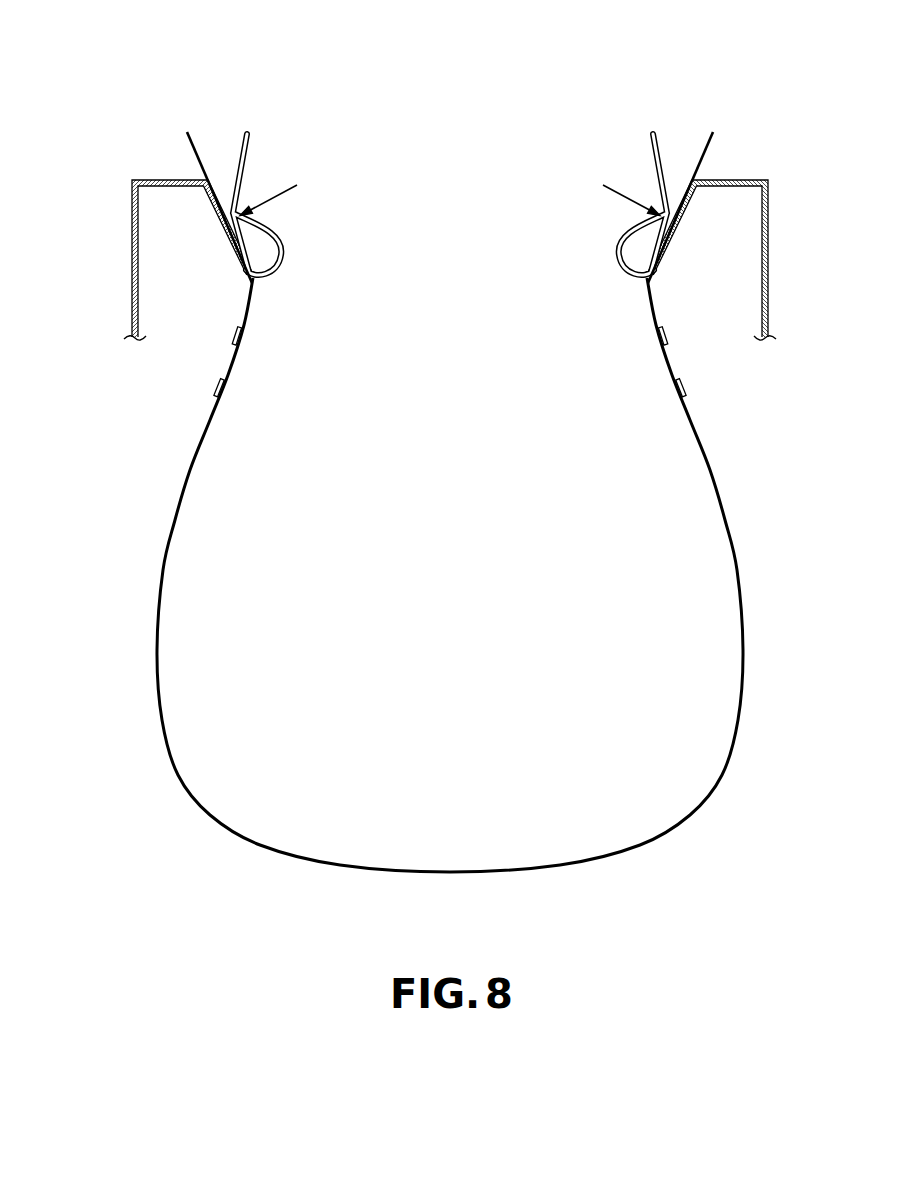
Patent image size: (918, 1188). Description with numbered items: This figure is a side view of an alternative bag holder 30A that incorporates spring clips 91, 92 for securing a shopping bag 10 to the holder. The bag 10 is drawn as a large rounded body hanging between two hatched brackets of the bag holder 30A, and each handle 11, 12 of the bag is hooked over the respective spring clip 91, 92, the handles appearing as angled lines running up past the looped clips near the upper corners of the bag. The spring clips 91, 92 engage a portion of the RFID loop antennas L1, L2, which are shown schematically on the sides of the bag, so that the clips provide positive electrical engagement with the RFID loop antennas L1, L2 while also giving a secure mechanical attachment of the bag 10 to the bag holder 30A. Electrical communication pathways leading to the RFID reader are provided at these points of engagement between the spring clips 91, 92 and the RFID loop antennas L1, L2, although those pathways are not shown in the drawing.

The shopping bag 10 is at (738, 712).
The handle 11 is at (197, 143).
The handle 12 is at (703, 143).
The bag holder 30A is at (131, 252).
The spring clip 91 is at (250, 153).
The spring clip 92 is at (650, 153).
The RFID loop antenna L1 is at (222, 222).
The RFID loop antenna L2 is at (688, 386).